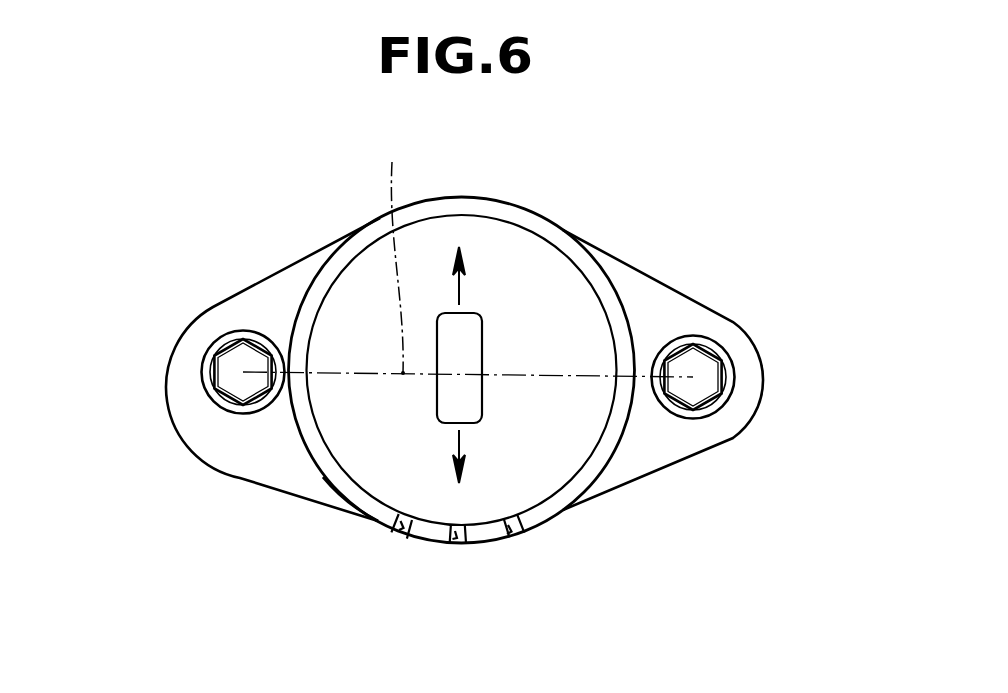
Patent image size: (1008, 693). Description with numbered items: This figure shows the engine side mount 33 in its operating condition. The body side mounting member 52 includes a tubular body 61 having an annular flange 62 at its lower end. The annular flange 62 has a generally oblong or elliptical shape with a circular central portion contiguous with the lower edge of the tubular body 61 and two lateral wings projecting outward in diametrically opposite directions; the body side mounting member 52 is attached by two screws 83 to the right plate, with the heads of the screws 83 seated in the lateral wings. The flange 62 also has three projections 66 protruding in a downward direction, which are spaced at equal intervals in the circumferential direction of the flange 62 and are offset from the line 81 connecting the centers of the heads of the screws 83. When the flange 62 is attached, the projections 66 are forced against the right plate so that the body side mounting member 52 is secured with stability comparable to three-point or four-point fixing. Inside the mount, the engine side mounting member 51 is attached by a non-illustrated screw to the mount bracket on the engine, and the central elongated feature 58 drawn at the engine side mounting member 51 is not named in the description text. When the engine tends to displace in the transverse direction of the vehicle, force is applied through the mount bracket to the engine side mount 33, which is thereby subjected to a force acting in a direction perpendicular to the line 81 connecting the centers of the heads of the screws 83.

The engine side mount 33 is at (312, 247).
The annular flange 62 is at (210, 303).
The line 81 is at (394, 253).
The engine side mounting member 51 is at (483, 338).
The slot 58 is at (485, 362).
The screws 83 is at (212, 373).
The body side mounting member 52 is at (323, 477).
The projections 66 is at (395, 527).
The tubular body 61 is at (592, 453).